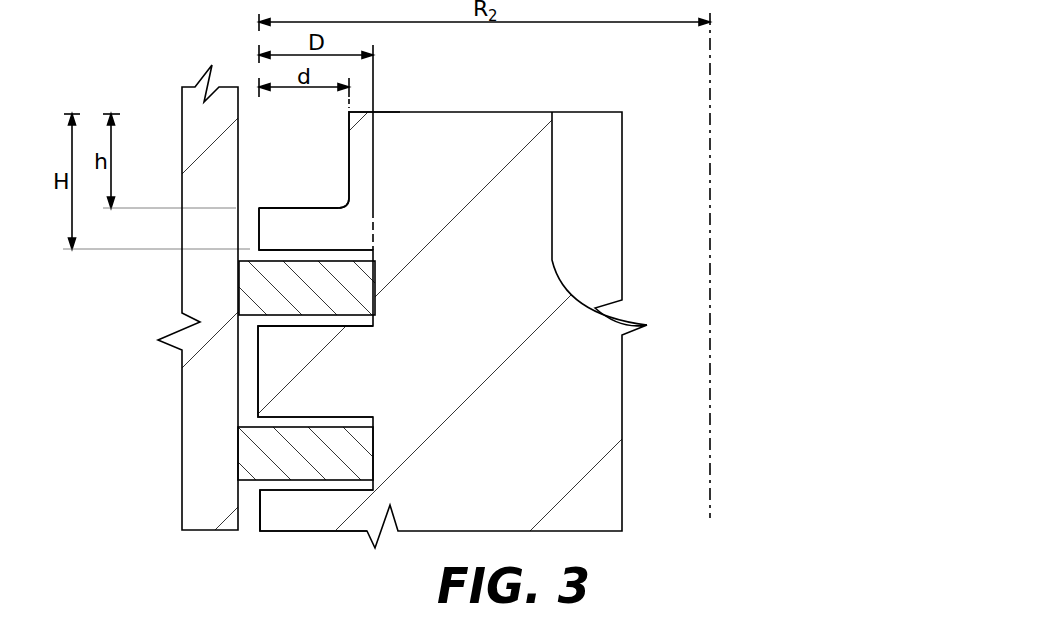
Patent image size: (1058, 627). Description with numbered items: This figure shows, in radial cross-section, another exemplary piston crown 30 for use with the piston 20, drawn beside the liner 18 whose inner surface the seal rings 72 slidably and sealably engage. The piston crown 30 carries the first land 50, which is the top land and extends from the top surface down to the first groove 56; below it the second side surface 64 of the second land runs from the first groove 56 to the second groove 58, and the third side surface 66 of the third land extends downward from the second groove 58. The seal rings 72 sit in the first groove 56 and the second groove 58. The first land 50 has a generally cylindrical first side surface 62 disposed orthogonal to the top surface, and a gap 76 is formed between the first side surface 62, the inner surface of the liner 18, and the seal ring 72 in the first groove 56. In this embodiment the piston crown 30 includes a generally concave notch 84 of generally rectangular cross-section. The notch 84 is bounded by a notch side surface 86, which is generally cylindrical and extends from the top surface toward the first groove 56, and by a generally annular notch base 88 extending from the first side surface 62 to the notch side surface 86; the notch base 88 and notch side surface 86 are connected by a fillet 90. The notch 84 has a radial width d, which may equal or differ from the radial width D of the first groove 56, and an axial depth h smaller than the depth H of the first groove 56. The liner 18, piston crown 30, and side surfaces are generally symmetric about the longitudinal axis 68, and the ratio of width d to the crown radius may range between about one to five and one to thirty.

The liner 18 is at (161, 276).
The piston 20 is at (182, 60).
The piston crown 30 is at (536, 430).
The first land 50 is at (268, 244).
The first groove 56 is at (327, 327).
The second groove 58 is at (310, 495).
The first side surface 62 is at (284, 214).
The second side surface 64 is at (259, 365).
The third side surface 66 is at (260, 513).
The longitudinal axis 68 is at (710, 103).
The seal ring 72 is at (252, 279).
The gap 76 is at (248, 222).
The notch 84 is at (352, 173).
The notch side surface 86 is at (349, 151).
The notch base 88 is at (265, 203).
The fillet 90 is at (350, 201).